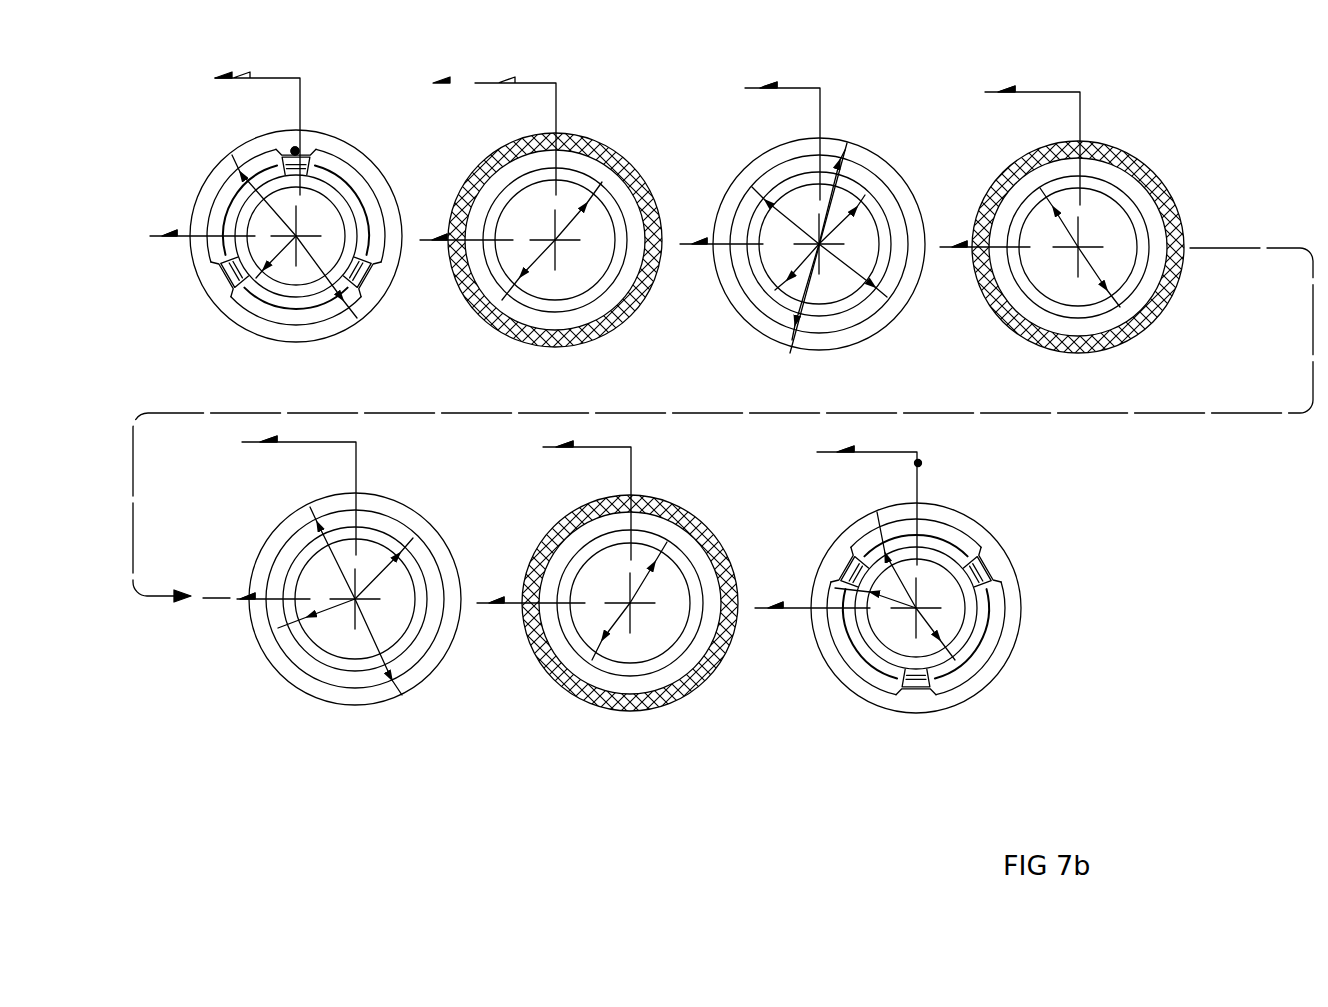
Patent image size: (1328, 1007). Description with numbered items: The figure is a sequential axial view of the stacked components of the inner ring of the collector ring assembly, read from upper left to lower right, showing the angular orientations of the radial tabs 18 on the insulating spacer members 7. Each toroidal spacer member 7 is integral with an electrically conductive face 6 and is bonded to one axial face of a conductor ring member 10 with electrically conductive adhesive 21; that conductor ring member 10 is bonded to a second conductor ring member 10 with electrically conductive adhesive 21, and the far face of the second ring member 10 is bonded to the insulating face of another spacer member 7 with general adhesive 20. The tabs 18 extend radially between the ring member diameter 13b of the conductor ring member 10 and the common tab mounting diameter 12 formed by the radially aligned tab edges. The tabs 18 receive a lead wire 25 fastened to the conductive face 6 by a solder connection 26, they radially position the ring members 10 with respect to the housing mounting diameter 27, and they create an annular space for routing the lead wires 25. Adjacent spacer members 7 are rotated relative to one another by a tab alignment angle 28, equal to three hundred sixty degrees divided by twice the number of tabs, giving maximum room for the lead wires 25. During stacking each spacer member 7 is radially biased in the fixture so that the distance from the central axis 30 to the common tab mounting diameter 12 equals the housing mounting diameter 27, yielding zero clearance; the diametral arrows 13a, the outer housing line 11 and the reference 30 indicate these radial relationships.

The conductive face 6 is at (338, 147).
The spacer member 7 is at (977, 533).
The conductor ring member 10 is at (872, 160).
The housing 11 is at (230, 152).
The common tab mounting diameter 12 is at (362, 212).
The first arrow direction 13a is at (787, 360).
The ring member diameter 13b is at (897, 305).
The radial tab 18 is at (222, 273).
The general adhesive 20 is at (687, 523).
The electrically conductive adhesive 21 is at (607, 157).
The lead wire 25 is at (262, 87).
The solder connection 26 is at (263, 79).
The housing mounting diameter 27 is at (296, 236).
The tab alignment angle 28 is at (918, 463).
The central axis 30 is at (290, 242).